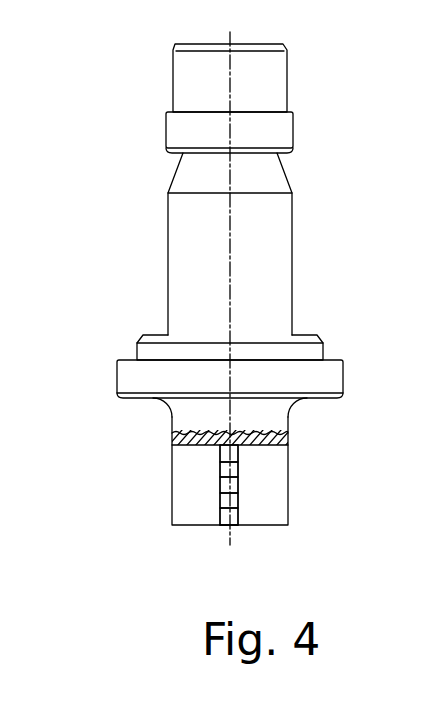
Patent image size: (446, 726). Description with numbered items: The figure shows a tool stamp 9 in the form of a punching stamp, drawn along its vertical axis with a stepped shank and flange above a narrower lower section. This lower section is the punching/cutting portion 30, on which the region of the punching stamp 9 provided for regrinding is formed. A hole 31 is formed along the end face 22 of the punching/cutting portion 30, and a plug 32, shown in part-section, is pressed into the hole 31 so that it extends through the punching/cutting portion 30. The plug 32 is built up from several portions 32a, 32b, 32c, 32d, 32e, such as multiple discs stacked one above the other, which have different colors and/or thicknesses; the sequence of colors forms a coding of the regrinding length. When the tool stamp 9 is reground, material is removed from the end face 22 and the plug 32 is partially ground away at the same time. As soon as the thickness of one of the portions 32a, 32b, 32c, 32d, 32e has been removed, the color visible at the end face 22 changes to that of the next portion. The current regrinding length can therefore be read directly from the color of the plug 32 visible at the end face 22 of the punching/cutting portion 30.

The tool stamp 9 is at (150, 171).
The end face 22 is at (190, 535).
The punching/cutting portion 30 is at (187, 498).
The hole 31 is at (223, 533).
The plug 32 is at (207, 479).
The plug portion 32a is at (236, 520).
The plug portion 32b is at (236, 500).
The plug portion 32c is at (236, 486).
The plug portion 32d is at (236, 469).
The plug portion 32e is at (233, 453).